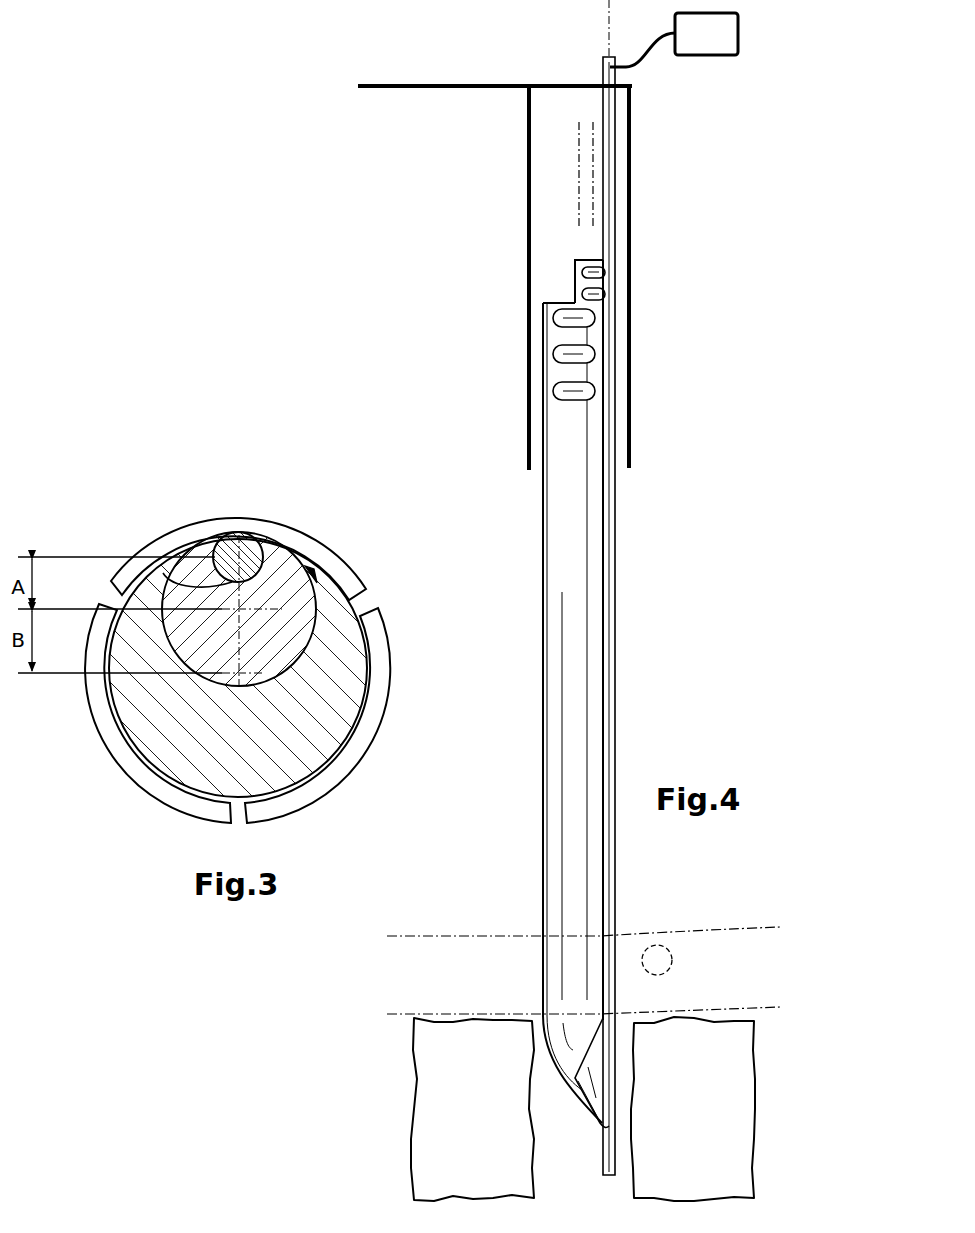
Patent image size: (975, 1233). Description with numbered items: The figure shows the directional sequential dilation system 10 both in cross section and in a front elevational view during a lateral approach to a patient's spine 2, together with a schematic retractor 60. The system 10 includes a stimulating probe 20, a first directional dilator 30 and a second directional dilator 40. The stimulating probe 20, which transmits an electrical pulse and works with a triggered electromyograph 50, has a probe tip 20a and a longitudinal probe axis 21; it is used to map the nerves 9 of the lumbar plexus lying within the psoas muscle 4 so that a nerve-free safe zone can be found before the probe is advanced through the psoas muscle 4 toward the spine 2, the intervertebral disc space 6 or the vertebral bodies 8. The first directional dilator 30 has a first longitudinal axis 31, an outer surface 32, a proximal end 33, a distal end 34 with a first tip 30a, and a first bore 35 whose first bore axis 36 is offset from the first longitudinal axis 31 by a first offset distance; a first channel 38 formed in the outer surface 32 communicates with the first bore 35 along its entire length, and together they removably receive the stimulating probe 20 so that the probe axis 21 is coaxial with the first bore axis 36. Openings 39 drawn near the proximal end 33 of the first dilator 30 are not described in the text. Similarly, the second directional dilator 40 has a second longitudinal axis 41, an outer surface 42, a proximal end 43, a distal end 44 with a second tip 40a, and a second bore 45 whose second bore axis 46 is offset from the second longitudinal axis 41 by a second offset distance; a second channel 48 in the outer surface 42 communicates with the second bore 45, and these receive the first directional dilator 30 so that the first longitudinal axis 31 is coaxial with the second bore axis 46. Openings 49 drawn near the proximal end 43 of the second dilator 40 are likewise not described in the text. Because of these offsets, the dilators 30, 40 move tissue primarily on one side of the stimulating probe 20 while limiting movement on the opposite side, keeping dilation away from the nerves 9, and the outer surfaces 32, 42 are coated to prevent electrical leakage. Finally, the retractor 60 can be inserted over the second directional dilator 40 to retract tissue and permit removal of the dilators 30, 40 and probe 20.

In FIG. 4, the spine 2 is at (440, 1148).
In FIG. 4, the psoas muscle 4 is at (502, 955).
In FIG. 4, the intervertebral disc space 6 is at (541, 1053).
In FIG. 4, the vertebral bodies 8 is at (440, 1080).
In FIG. 4, the nerves 9 is at (673, 960).
In FIG. 3, the directional sequential dilation system 10 is at (90, 446).
In FIG. 4, the directional sequential dilation system 10 is at (720, 174).
In FIG. 3, the stimulating probe 20 is at (233, 527).
In FIG. 4, the stimulating probe 20 is at (607, 214).
In FIG. 4, the probe tip 20a is at (606, 1176).
In FIG. 3, the longitudinal probe axis 21 is at (220, 540).
In FIG. 4, the longitudinal probe axis 21 is at (609, 18).
In FIG. 3, the first directional dilator 30 is at (292, 592).
In FIG. 4, the first directional dilator 30 is at (588, 280).
In FIG. 4, the first tip 30a is at (601, 1125).
In FIG. 3, the first longitudinal axis 31 is at (243, 605).
In FIG. 4, the first longitudinal axis 31 is at (592, 165).
In FIG. 3, the outer surface 32 is at (310, 640).
In FIG. 4, the outer surface 32 is at (605, 285).
In FIG. 4, the proximal end 33 is at (597, 264).
In FIG. 4, the distal end 34 is at (583, 1093).
In FIG. 3, the first bore 35 is at (168, 568).
In FIG. 3, the first bore axis 36 is at (257, 530).
In FIG. 3, the first channel 38 is at (234, 540).
In FIG. 4, the first channel 38 is at (615, 413).
In FIG. 4, the inner cannula side openings 39 is at (599, 267).
In FIG. 3, the second directional dilator 40 is at (340, 701).
In FIG. 4, the second directional dilator 40 is at (573, 627).
In FIG. 4, the second tip 40a is at (578, 1080).
In FIG. 3, the second longitudinal axis 41 is at (232, 676).
In FIG. 4, the second longitudinal axis 41 is at (579, 173).
In FIG. 3, the outer surface 42 is at (342, 745).
In FIG. 4, the outer surface 42 is at (567, 477).
In FIG. 4, the proximal end 43 is at (550, 308).
In FIG. 4, the distal end 44 is at (553, 1060).
In FIG. 3, the second bore 45 is at (240, 688).
In FIG. 3, the second bore axis 46 is at (293, 568).
In FIG. 3, the second channel 48 is at (277, 540).
In FIG. 4, the second channel 48 is at (607, 643).
In FIG. 4, the outer cannula side openings 49 is at (588, 317).
In FIG. 4, the triggered electromyograph 50 is at (738, 33).
In FIG. 3, the retractor 60 is at (97, 706).
In FIG. 4, the retractor 60 is at (466, 84).